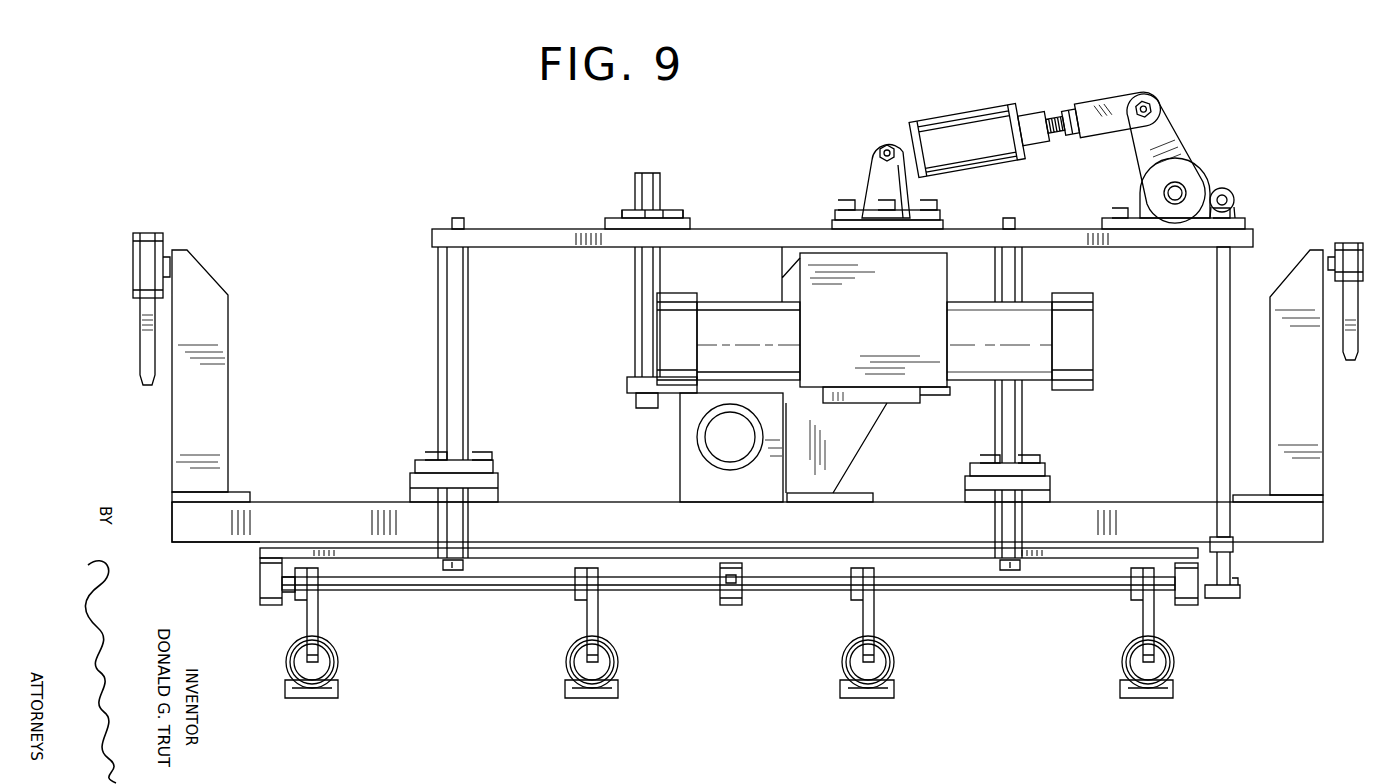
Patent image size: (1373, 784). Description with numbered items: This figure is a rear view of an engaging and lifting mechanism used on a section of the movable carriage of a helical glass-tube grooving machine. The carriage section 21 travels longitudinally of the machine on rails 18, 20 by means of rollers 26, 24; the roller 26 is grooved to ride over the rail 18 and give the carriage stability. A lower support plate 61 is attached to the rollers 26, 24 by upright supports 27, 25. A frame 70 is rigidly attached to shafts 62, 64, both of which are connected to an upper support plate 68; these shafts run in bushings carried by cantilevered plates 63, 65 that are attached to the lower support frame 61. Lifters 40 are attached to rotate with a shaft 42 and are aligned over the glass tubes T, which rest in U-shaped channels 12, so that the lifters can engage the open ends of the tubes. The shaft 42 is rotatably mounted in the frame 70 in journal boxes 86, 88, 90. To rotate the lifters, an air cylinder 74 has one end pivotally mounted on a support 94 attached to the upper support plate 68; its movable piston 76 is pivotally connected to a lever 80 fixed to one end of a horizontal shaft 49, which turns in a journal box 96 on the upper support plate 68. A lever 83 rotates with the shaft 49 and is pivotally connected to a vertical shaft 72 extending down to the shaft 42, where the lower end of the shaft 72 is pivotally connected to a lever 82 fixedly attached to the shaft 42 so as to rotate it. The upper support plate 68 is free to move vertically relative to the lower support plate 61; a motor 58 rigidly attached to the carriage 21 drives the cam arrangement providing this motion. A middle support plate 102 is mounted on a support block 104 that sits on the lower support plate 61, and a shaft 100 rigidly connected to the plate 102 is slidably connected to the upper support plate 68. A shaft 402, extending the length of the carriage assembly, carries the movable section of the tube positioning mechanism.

The U-shaped channel 12 is at (1206, 696).
The rail 18 is at (140, 336).
The rail 20 is at (1356, 352).
The carriage section 21 is at (292, 498).
The roller 24 is at (1352, 243).
The upright support 25 is at (1290, 413).
The roller 26 is at (140, 272).
The upright support 27 is at (228, 342).
The lifter 40 is at (1122, 622).
The shaft 42 is at (452, 585).
The horizontal shaft 49 is at (1178, 200).
The motor 58 is at (875, 325).
The lower support plate 61 is at (216, 543).
The shaft 62 is at (468, 355).
The cantilevered plate 63 is at (498, 478).
The shaft 64 is at (1022, 415).
The cantilevered plate 65 is at (1050, 480).
The upper support plate 68 is at (541, 228).
The frame 70 is at (545, 555).
The shaft 72 is at (1217, 341).
The air cylinder 74 is at (962, 120).
The movable piston 76 is at (1062, 120).
The lever 80 is at (1167, 135).
The lever 82 is at (1212, 598).
The lever 83 is at (1222, 188).
The journal box 86 is at (262, 606).
The journal box 88 is at (1192, 605).
The journal box 90 is at (732, 605).
The support 94 is at (870, 178).
The journal box 96 is at (1140, 196).
The shaft 100 is at (633, 291).
The middle support plate 102 is at (627, 385).
The support block 104 is at (683, 487).
The shaft 402 is at (700, 432).
The glass tube T is at (1124, 664).